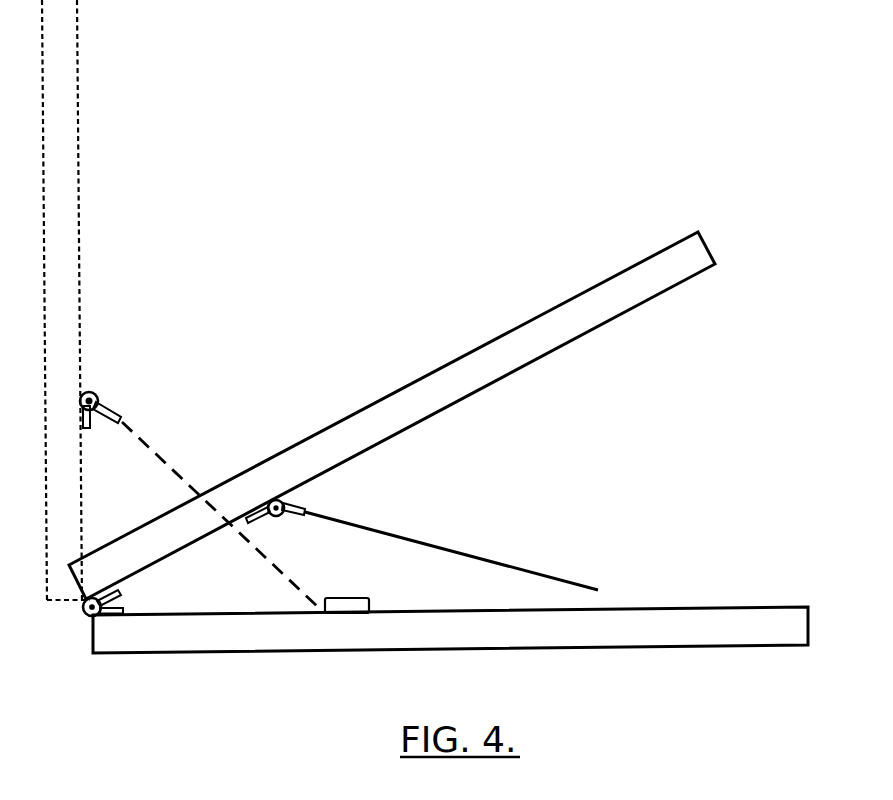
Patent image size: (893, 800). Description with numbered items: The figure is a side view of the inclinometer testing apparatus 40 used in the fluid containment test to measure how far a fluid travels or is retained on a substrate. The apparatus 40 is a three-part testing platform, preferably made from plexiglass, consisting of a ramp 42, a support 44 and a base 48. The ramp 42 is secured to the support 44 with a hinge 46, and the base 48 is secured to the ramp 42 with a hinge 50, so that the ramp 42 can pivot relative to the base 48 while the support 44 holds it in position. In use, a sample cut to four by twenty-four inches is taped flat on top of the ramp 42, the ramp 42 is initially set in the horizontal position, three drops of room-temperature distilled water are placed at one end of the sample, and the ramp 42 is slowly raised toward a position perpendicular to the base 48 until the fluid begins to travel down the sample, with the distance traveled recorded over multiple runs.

The apparatus 40 is at (378, 372).
The ramp 42 is at (543, 354).
The support 44 is at (420, 541).
The hinge 46 is at (291, 516).
The base 48 is at (412, 625).
The hinge 50 is at (116, 595).